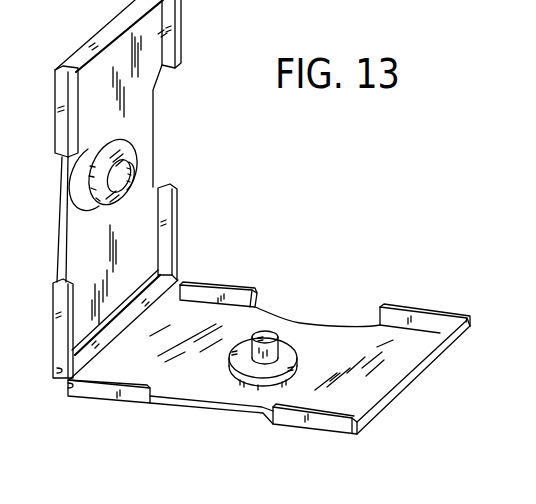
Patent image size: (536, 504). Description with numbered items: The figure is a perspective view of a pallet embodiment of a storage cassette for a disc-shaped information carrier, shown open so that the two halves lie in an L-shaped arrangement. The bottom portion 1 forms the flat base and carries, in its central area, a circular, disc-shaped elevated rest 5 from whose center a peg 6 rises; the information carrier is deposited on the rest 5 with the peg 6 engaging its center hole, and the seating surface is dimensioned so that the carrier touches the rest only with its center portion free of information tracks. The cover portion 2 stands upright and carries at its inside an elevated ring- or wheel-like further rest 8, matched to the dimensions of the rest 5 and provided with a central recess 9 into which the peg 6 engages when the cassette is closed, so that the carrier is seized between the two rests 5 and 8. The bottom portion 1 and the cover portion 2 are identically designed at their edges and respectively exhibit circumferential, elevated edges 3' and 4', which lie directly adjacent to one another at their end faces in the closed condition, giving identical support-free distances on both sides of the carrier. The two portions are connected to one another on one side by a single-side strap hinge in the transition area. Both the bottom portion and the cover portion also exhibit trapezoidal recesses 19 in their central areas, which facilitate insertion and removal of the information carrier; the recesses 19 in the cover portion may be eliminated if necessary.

The bottom portion 1 is at (118, 378).
The cover portion 2 is at (82, 124).
The circumferential elevated edge 3' is at (136, 162).
The circumferential elevated edge 4' is at (326, 370).
The elevated rest 5 is at (289, 353).
The peg 6 is at (258, 330).
The further elevated rest 8 is at (126, 150).
The central recess 9 is at (128, 188).
The trapezoidal recesses 19 is at (66, 207).